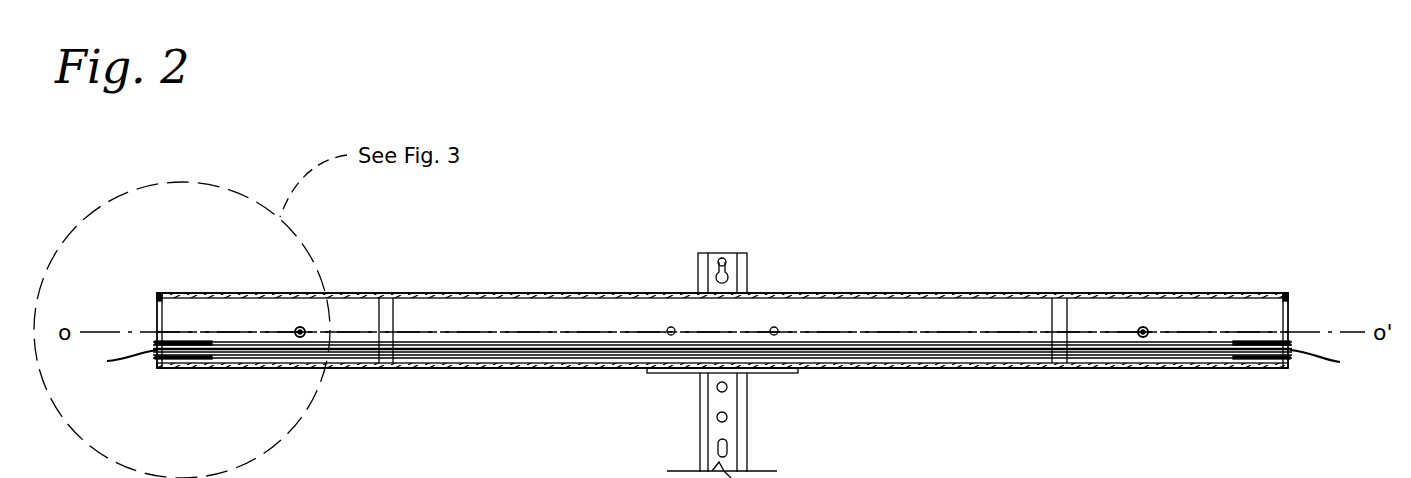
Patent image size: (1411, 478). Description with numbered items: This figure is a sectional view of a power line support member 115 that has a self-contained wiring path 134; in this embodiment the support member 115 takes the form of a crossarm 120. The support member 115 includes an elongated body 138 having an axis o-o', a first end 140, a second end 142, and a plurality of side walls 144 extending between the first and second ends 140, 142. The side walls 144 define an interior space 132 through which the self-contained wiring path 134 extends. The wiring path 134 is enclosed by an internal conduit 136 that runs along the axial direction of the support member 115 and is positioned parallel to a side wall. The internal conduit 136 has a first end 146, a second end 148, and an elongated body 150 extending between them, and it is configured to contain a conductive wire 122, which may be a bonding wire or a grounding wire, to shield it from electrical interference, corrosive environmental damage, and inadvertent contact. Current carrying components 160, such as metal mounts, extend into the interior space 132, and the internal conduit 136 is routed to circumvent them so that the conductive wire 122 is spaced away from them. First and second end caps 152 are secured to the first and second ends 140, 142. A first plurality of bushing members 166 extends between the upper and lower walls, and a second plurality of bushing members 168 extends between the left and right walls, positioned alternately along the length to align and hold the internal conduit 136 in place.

The power line support member 115 is at (842, 222).
The crossarm 120 is at (722, 232).
The conductive wire 122 is at (108, 363).
The interior space 132 is at (847, 315).
The self-contained wiring path 134 is at (898, 352).
The internal conduit 136 is at (947, 343).
The elongated body 138 is at (663, 293).
The first end 140 is at (157, 310).
The second end 142 is at (1290, 308).
The side walls 144 is at (578, 293).
The first end of internal conduit 146 is at (157, 355).
The second end of internal conduit 148 is at (1292, 353).
The elongated body of internal conduit 150 is at (497, 368).
The end caps 152 is at (157, 299).
The current carrying components 160 is at (747, 413).
The first plurality of bushing members 166 is at (393, 312).
The second plurality of bushing members 168 is at (306, 326).